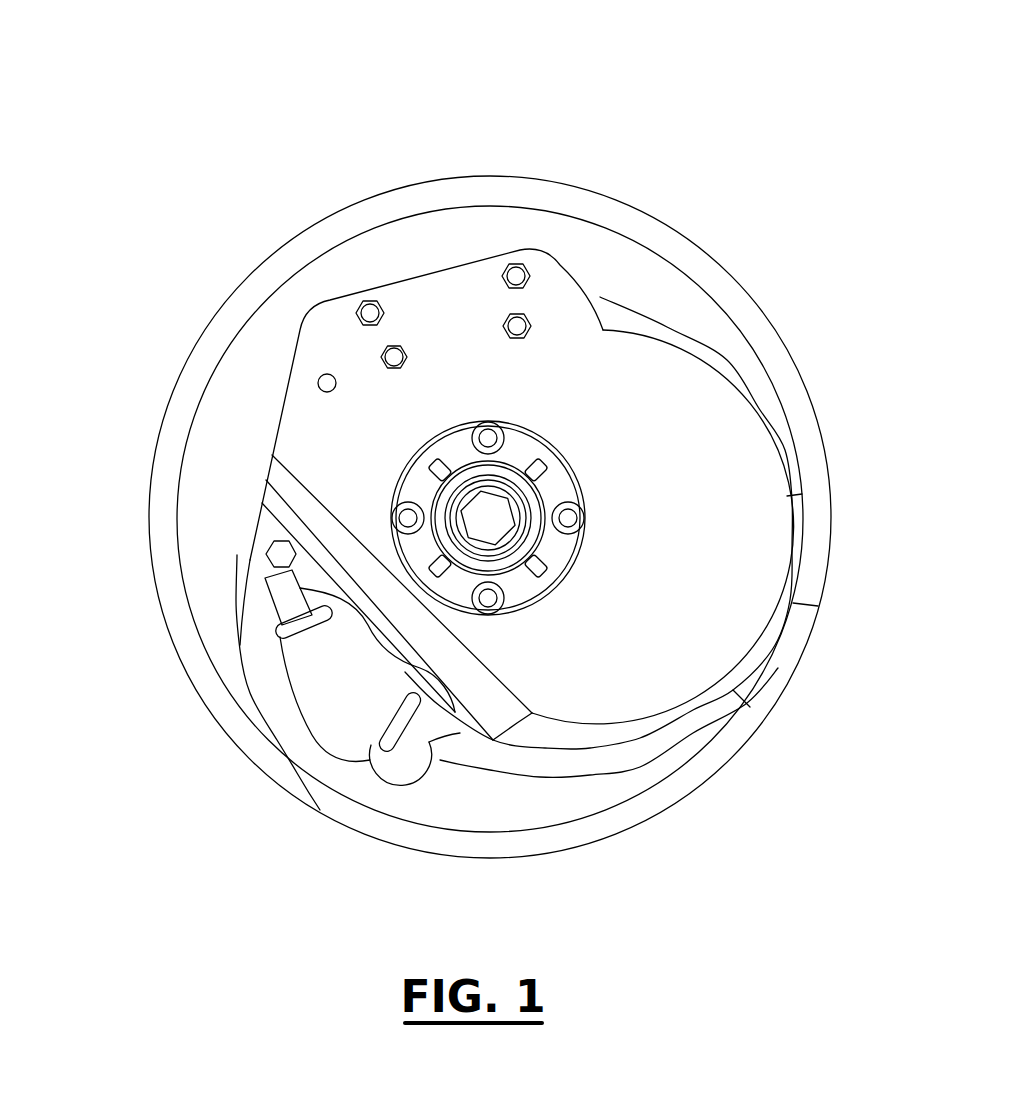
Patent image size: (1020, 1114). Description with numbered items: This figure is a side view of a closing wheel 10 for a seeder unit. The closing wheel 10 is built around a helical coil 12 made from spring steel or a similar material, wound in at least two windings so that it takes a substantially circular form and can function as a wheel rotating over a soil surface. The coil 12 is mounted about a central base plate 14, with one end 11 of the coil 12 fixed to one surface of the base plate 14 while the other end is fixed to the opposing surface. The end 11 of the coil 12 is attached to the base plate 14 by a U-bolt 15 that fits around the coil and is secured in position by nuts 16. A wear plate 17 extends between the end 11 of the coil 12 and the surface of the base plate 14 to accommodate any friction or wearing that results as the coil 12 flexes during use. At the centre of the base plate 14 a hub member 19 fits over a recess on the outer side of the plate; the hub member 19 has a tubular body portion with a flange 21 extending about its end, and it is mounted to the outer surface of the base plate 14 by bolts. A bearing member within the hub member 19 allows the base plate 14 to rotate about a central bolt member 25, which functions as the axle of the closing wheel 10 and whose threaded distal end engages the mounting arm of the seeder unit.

The closing wheel 10 is at (670, 185).
The end of the coil 11 is at (277, 585).
The helical coil 12 is at (760, 323).
The base plate 14 is at (576, 659).
The U-bolts 15 is at (298, 625).
The nuts 16 is at (514, 273).
The wear plate 17 is at (263, 618).
The hub member 19 is at (390, 465).
The flange 21 is at (558, 548).
The bolt member 25 is at (492, 517).